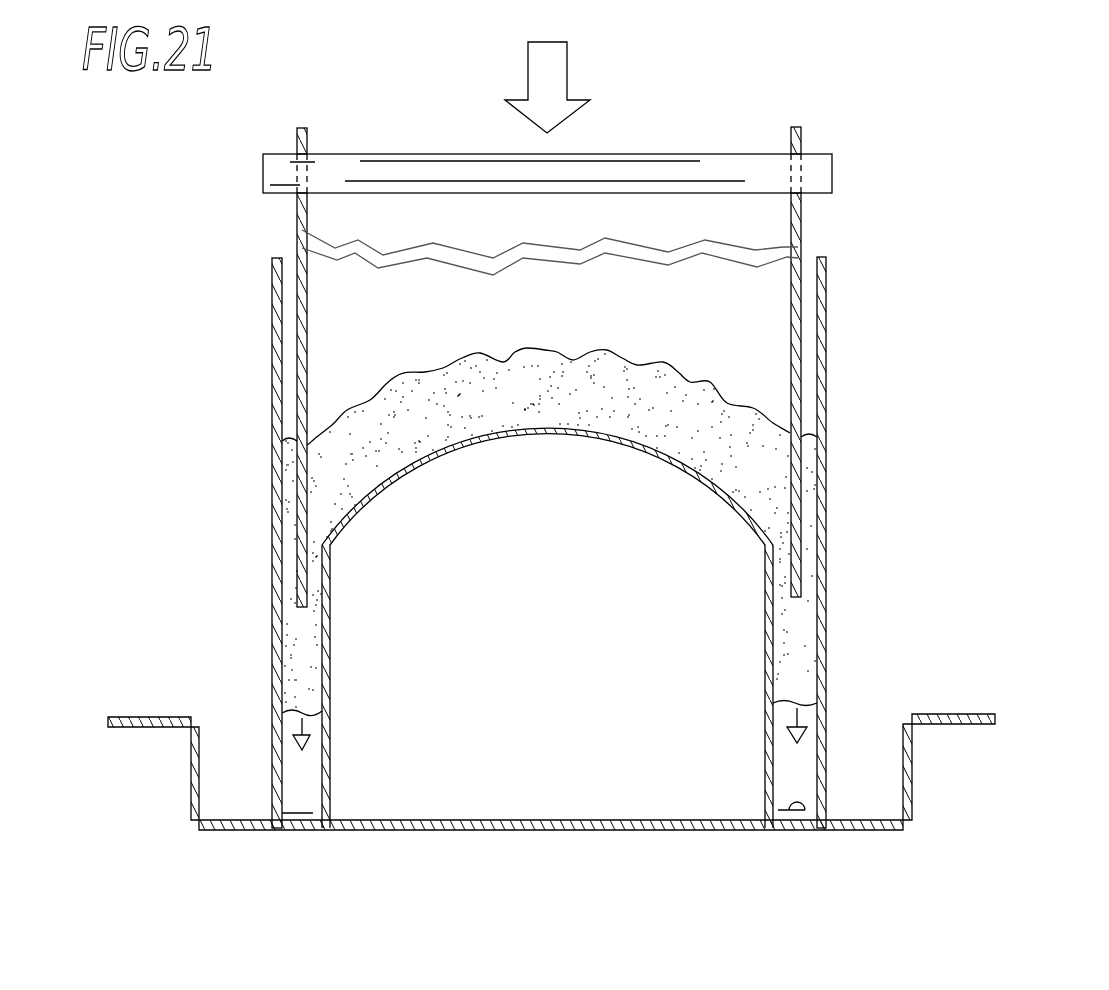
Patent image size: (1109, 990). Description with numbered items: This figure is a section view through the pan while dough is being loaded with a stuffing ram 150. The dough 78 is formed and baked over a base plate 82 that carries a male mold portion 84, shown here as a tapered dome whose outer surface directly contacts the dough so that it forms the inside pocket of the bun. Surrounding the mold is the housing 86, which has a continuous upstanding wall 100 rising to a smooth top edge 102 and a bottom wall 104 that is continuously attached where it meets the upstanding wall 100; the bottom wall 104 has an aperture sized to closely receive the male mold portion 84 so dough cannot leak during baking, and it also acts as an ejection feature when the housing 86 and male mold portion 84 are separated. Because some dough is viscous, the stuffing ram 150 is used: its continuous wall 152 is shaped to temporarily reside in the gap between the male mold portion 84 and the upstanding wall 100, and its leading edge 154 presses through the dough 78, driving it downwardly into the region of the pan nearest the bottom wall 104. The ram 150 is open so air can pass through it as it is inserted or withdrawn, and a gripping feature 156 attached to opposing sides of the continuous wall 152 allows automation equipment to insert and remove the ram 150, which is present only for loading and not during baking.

The stuffing ram 150 is at (831, 137).
The gripping feature 156 is at (697, 165).
The continuous wall 152 is at (800, 231).
The top edge 102 is at (277, 257).
The continuous upstanding wall 100 is at (272, 403).
The housing 86 is at (252, 537).
The male mold portion 84 is at (600, 435).
The dough 78 is at (652, 378).
The leading edge 154 is at (797, 612).
The bottom wall 104 is at (310, 815).
The base plate 82 is at (192, 843).